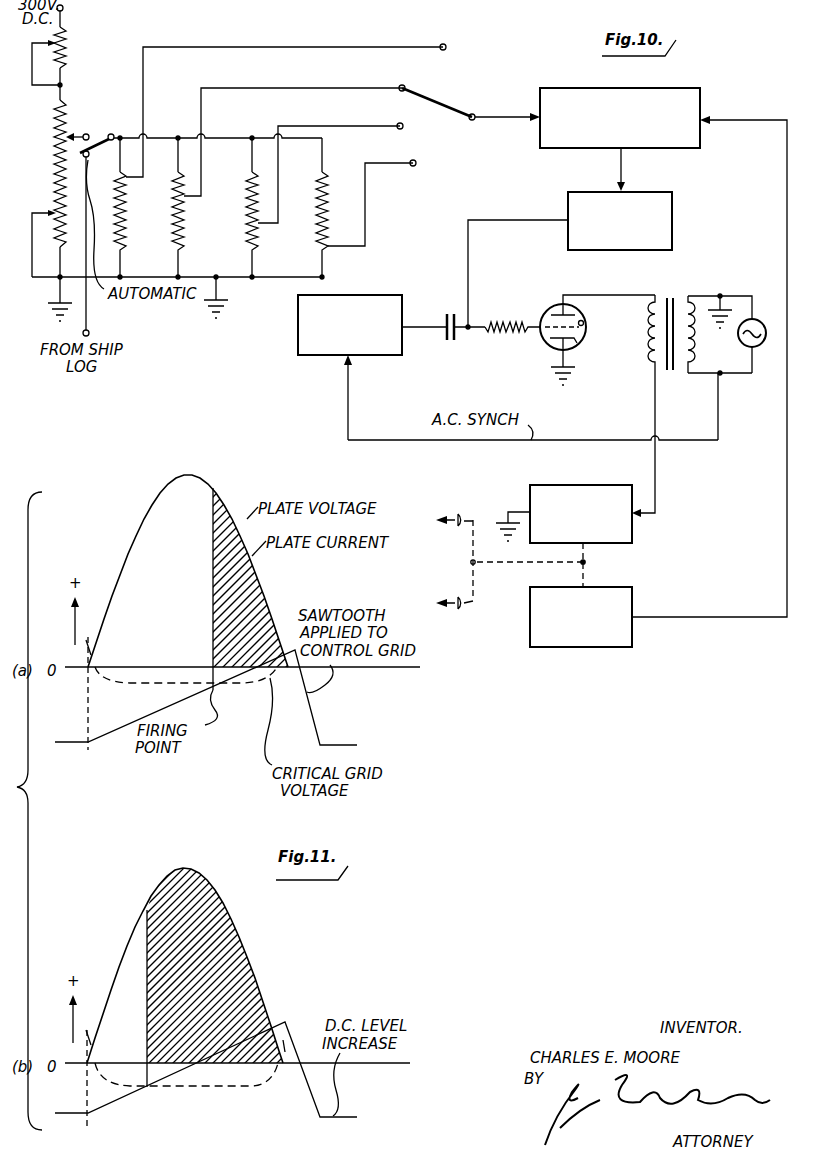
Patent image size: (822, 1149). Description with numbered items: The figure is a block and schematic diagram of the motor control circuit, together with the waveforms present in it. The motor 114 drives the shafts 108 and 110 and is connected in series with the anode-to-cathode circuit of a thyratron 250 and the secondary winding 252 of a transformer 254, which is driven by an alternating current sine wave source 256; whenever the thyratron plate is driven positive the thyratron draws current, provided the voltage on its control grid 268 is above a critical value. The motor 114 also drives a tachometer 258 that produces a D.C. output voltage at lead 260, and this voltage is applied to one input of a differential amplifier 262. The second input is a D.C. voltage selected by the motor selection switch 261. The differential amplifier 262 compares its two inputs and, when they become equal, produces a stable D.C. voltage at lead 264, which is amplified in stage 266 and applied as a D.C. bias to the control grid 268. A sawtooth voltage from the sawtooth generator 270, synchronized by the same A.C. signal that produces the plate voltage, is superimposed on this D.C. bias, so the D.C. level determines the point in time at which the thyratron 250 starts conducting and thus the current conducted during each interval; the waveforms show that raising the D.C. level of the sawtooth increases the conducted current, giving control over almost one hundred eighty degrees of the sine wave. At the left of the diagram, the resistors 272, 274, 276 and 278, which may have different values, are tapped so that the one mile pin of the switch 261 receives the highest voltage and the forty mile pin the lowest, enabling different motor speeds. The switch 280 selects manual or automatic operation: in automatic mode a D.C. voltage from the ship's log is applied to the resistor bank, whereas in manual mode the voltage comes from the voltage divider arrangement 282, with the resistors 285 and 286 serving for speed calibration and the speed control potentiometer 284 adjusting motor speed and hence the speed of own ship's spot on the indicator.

The speed control potentiometer 284 is at (70, 133).
The speed calibration resistor 286 is at (58, 72).
The manual-automatic mode switch 280 is at (136, 110).
The voltage divider arrangement 282 is at (45, 210).
The speed calibration resistor 285 is at (56, 196).
The resistor 272 is at (134, 233).
The resistor 274 is at (186, 244).
The resistor 276 is at (248, 208).
The resistor 278 is at (316, 220).
The motor selection switch 261 is at (458, 110).
The differential amplifier 262 is at (566, 88).
The output lead 264 is at (619, 170).
The amplifier stage 266 is at (673, 224).
The sawtooth generator 270 is at (327, 356).
The thyratron 250 is at (579, 328).
The control grid 268 is at (577, 342).
The transformer 254 is at (690, 292).
The secondary winding 252 is at (698, 363).
The alternating current source 256 is at (755, 318).
The motor 114 is at (580, 486).
The shaft 108 is at (466, 513).
The shaft 110 is at (466, 612).
The tachometer 258 is at (582, 648).
The tachometer output lead 260 is at (740, 618).